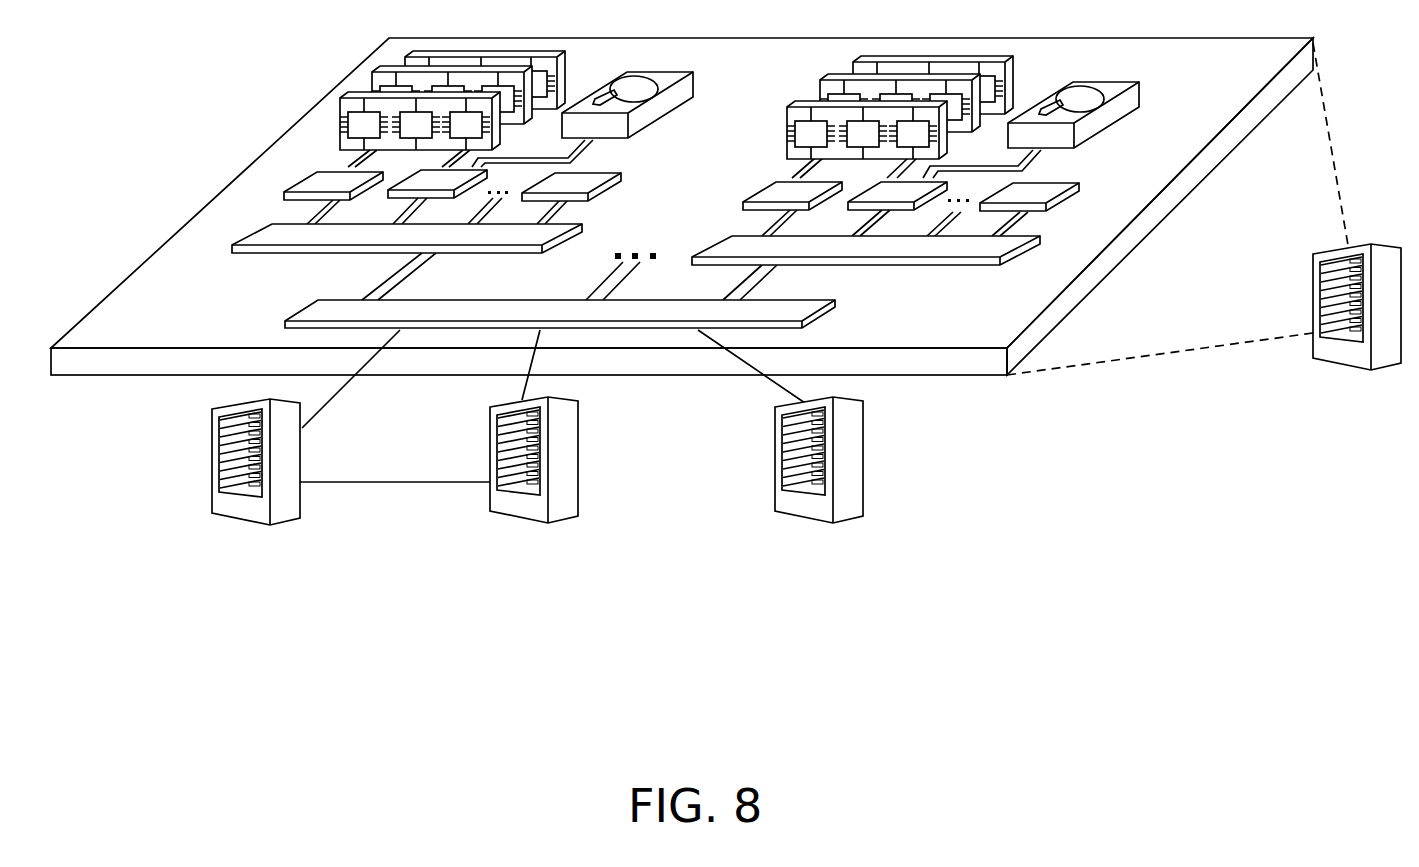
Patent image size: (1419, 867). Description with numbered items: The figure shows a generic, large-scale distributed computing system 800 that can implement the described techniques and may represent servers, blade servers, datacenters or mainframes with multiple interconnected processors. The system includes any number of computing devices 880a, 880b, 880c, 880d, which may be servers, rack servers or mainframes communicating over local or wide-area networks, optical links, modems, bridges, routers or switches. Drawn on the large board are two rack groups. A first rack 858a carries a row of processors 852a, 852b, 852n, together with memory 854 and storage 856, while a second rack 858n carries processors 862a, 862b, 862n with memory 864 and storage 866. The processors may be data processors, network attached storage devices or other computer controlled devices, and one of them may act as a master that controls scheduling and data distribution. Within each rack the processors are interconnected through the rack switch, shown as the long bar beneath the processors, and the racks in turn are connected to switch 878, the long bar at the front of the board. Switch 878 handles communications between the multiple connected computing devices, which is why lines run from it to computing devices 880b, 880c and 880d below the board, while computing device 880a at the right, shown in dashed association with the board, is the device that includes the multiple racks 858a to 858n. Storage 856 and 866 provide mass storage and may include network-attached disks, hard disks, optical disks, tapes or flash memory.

The distributed computing system 800 is at (221, 55).
The processor 852a is at (328, 182).
The processor 852b is at (418, 181).
The processor 852n is at (587, 180).
The memory 854 is at (491, 50).
The storage 856 is at (653, 70).
The rack 858a is at (272, 236).
The rack 858n is at (985, 246).
The processor 862a is at (790, 190).
The processor 862b is at (890, 193).
The processor 862n is at (1030, 192).
The memory 864 is at (938, 56).
The storage 866 is at (1105, 78).
The switch 878 is at (315, 308).
The computing device 880a is at (1312, 275).
The computing device 880b is at (212, 462).
The computing device 880c is at (490, 456).
The computing device 880d is at (775, 464).